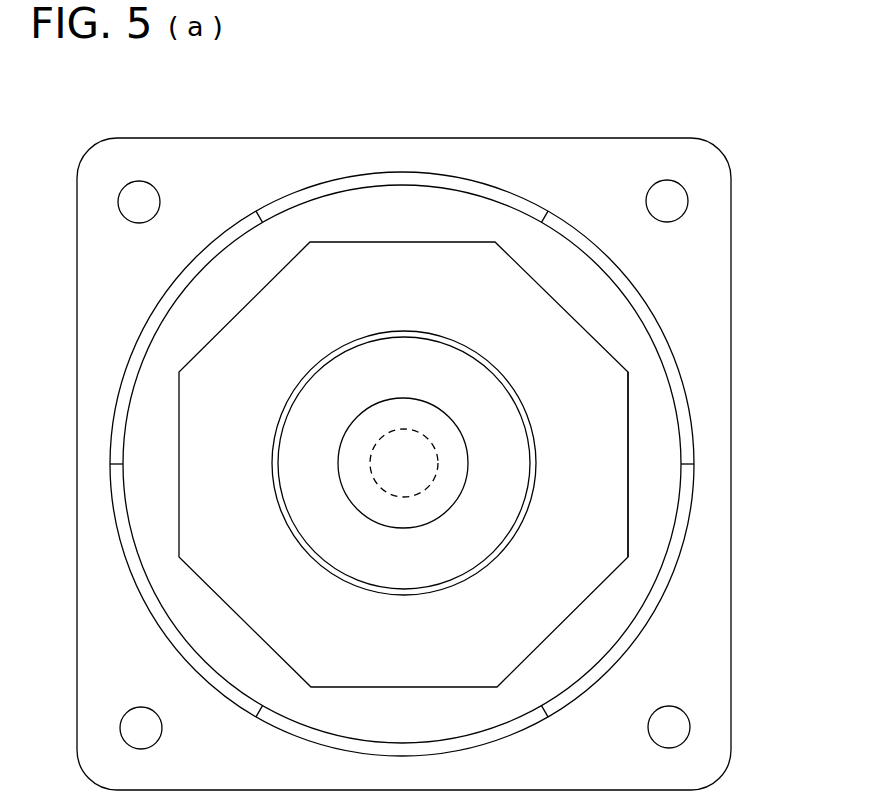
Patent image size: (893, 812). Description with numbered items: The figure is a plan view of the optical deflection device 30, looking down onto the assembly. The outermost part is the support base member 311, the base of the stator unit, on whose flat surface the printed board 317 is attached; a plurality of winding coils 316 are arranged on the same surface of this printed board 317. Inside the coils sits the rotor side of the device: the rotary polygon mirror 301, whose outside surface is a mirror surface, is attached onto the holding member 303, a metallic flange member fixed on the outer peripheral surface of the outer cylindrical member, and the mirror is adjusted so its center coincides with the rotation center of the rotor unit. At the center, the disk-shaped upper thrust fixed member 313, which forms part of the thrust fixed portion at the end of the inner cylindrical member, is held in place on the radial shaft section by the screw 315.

The optical deflection device 30 is at (441, 443).
The rotary polygon mirror 301 is at (628, 395).
The holding member 303 is at (658, 440).
The support base member 311 is at (441, 464).
The upper thrust fixed member 313 is at (568, 348).
The screw 315 is at (468, 463).
The winding coil 316 is at (688, 550).
The printed board 317 is at (715, 665).